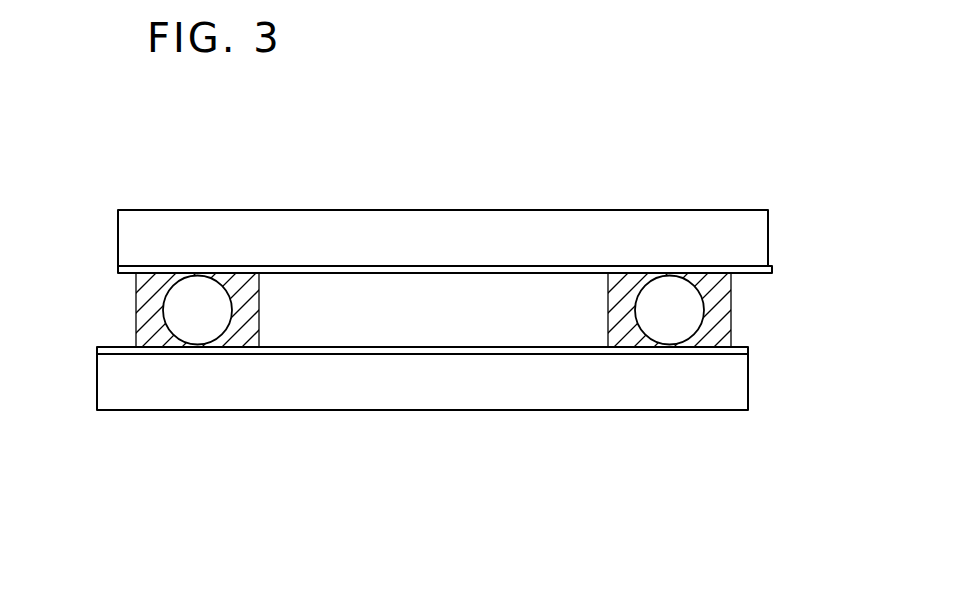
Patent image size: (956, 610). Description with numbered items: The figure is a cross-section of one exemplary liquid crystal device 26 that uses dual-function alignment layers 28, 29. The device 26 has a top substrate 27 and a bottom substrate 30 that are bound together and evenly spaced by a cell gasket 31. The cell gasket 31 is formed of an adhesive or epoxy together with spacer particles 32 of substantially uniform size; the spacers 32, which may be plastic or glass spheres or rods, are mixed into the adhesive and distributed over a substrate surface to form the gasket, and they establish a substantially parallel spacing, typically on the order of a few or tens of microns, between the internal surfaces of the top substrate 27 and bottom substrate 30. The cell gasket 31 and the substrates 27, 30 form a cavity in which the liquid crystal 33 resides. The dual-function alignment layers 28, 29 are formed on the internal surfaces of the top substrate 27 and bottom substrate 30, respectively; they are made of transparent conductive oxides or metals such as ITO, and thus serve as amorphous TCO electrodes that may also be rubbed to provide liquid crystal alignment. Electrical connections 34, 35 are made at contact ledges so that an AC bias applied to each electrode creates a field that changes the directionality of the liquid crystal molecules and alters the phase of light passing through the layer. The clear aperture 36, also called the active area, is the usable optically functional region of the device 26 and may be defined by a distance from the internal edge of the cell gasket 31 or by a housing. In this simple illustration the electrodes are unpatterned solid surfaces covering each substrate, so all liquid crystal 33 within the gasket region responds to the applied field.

The liquid crystal device 26 is at (608, 116).
The top substrate 27 is at (118, 239).
The dual-function alignment layer 28 is at (118, 270).
The dual-function alignment layer 29 is at (97, 352).
The bottom substrate 30 is at (97, 387).
The cell gasket 31 is at (731, 326).
The spacer particles 32 is at (634, 318).
The liquid crystal 33 is at (398, 328).
The electrical connection 34 is at (772, 274).
The electrical connection 35 is at (104, 347).
The clear aperture 36 is at (548, 195).